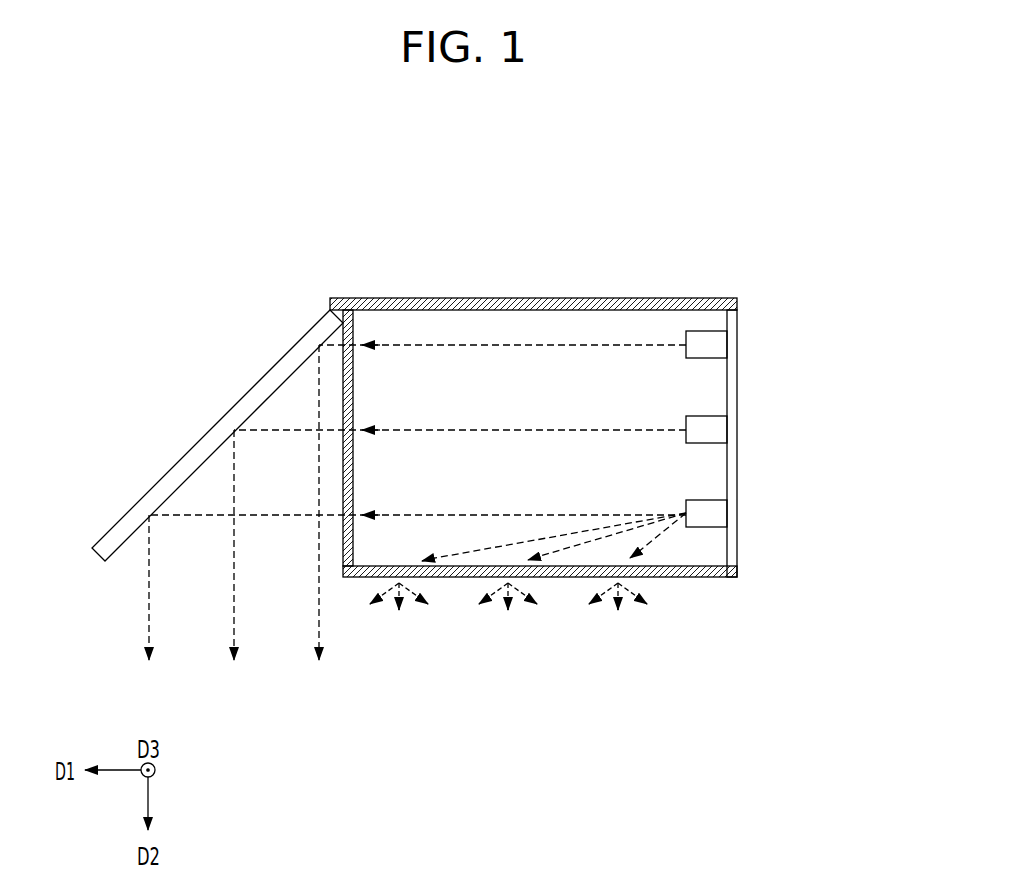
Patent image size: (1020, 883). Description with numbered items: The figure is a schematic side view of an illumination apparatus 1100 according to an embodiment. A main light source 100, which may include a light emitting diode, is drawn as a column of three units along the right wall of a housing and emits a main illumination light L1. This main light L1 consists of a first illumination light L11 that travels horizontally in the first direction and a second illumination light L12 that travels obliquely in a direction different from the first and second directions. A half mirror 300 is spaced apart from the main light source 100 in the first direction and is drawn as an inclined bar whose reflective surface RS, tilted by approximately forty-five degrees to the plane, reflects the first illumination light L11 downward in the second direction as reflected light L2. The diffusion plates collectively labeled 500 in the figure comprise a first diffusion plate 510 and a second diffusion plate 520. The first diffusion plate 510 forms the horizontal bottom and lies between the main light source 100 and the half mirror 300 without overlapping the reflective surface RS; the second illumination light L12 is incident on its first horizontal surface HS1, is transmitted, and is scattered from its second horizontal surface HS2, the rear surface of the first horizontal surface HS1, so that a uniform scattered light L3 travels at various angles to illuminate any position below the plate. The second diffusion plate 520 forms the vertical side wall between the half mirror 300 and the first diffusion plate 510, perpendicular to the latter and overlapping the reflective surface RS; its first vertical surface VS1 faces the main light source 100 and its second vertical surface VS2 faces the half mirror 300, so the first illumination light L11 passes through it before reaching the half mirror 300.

The main light source 100 is at (719, 344).
The half mirror 300 is at (218, 433).
The housing 500 is at (533, 387).
The first diffusion plate 510 is at (460, 566).
The second diffusion plate 520 is at (354, 383).
The illumination apparatus 1100 is at (657, 834).
The reflective surface RS is at (276, 405).
The first vertical surface VS1 is at (366, 393).
The second vertical surface VS2 is at (330, 368).
The first horizontal surface HS1 is at (709, 556).
The second horizontal surface HS2 is at (709, 590).
The main illumination light L1 is at (498, 819).
The first illumination light L11 is at (417, 430).
The second illumination light L12 is at (554, 542).
The reflected light L2 is at (234, 502).
The scattered light L3 is at (508, 622).